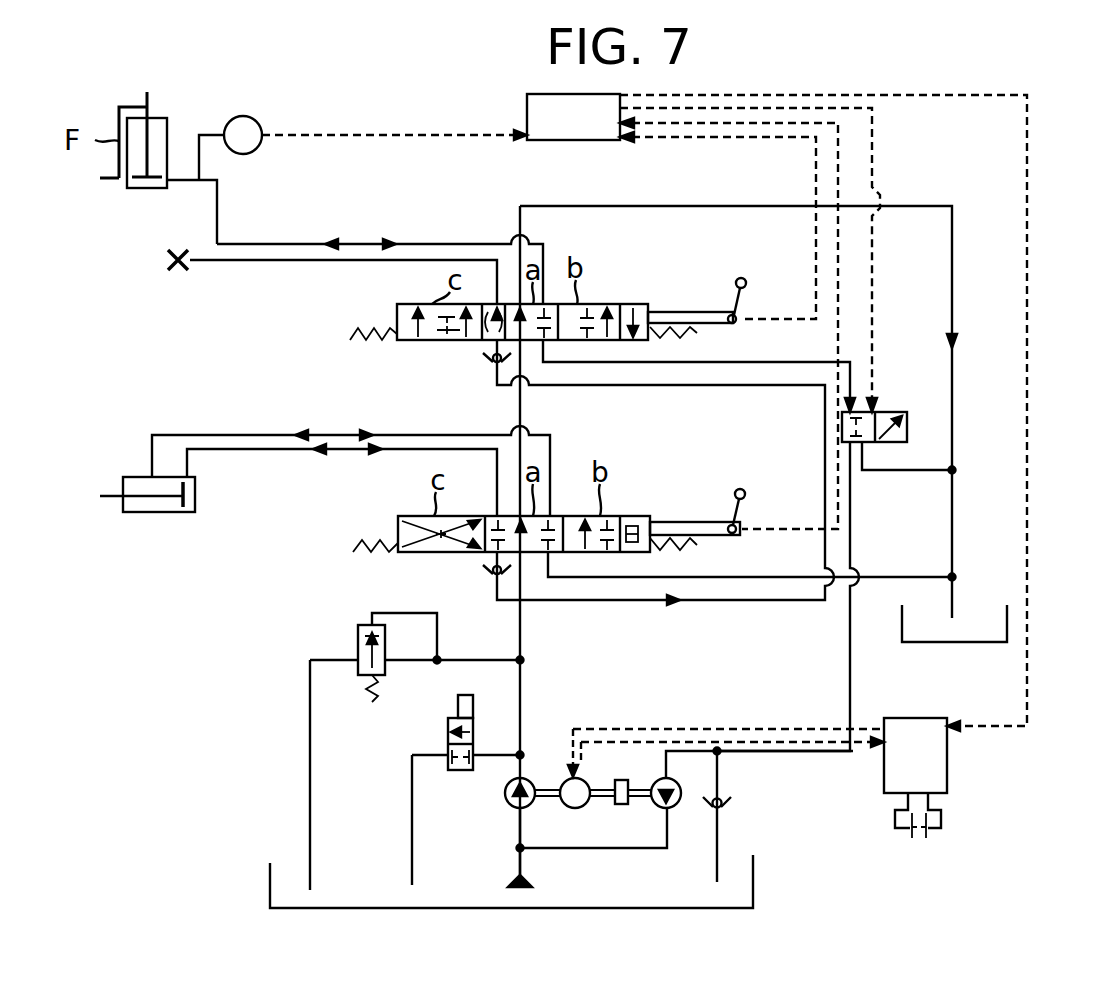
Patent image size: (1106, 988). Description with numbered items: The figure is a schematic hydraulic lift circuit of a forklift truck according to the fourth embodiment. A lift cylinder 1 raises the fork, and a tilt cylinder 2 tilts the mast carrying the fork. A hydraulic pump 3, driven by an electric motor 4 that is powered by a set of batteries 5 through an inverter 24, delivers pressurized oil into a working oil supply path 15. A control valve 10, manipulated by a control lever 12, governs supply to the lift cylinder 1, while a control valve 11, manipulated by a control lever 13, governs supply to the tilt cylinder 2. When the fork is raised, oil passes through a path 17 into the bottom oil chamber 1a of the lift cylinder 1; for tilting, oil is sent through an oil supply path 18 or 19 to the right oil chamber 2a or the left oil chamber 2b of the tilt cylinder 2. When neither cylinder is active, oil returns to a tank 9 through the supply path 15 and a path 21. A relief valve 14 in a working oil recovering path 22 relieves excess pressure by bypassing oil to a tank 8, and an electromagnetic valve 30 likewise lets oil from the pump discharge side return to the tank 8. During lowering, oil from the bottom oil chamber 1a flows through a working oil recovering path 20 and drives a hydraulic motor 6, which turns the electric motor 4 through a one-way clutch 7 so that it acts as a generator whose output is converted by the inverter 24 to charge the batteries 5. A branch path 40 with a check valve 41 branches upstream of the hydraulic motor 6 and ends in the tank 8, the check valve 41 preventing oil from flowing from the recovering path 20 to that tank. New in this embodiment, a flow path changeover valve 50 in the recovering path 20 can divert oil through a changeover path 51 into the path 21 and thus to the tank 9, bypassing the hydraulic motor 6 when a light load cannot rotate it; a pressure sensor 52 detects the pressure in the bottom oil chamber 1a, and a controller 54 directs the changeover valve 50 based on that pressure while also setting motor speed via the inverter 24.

The lift cylinder 1 is at (150, 116).
The bottom oil chamber 1a is at (140, 194).
The tilt cylinder 2 is at (150, 515).
The right oil chamber 2a is at (196, 480).
The left oil chamber 2b is at (133, 476).
The hydraulic pump 3 is at (506, 796).
The electric motor 4 is at (572, 775).
The set of batteries 5 is at (921, 836).
The hydraulic motor 6 is at (670, 776).
The one-way clutch 7 is at (622, 804).
The tank 8 is at (268, 880).
The tank 9 is at (930, 645).
The control valve 10 is at (636, 300).
The control valve 11 is at (628, 510).
The control lever 12 is at (745, 280).
The control lever 13 is at (746, 494).
The relief valve 14 is at (358, 650).
The working oil supply path 15 is at (525, 620).
The path 17 is at (343, 244).
The oil supply path 18 is at (330, 435).
The oil supply path 19 is at (330, 462).
The working oil recovering path 20 is at (808, 360).
The path 21 is at (952, 285).
The working oil recovering path 22 is at (310, 717).
The inverter 24 is at (947, 770).
The electromagnetic valve 30 is at (457, 710).
The branch path 40 is at (720, 778).
The check valve 41 is at (728, 808).
The flow path changeover valve 50 is at (905, 410).
The changeover path 51 is at (920, 470).
The pressure sensor 52 is at (256, 150).
The controller 54 is at (575, 143).